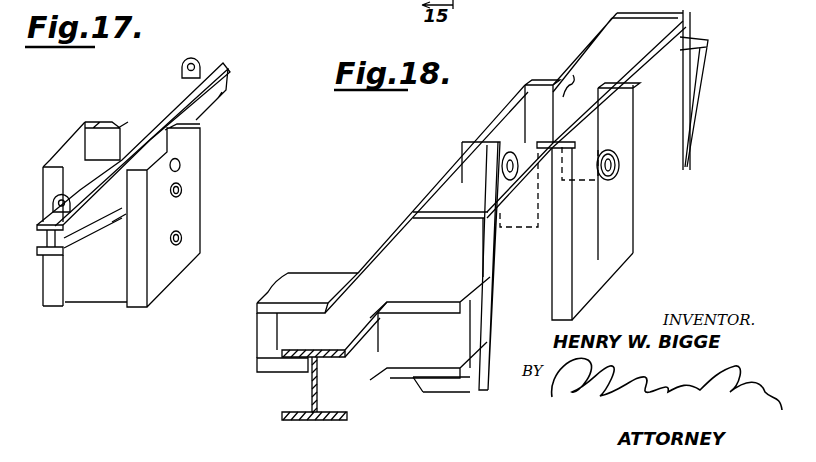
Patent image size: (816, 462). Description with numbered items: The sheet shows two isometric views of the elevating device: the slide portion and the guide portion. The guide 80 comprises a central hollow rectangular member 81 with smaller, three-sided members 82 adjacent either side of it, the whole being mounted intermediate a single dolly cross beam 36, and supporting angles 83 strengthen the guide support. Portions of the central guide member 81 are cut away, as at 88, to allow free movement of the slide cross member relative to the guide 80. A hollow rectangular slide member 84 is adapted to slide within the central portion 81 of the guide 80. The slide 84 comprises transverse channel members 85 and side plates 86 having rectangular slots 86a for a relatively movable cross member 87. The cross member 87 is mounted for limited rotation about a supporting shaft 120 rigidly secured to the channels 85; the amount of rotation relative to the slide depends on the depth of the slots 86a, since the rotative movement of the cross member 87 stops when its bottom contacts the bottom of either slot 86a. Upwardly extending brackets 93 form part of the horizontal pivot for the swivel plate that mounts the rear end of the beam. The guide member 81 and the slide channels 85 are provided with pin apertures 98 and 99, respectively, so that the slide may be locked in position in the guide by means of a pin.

In FIG. 18, the dolly cross beam 36 is at (408, 237).
In FIG. 18, the guide 80 is at (652, 218).
In FIG. 18, the central hollow rectangular member 81 is at (516, 107).
In FIG. 18, the three-sided members 82 is at (460, 181).
In FIG. 18, the supporting angles 83 is at (462, 385).
In FIG. 17, the hollow rectangular slide member 84 is at (215, 177).
In FIG. 17, the transverse channel members 85 is at (70, 140).
In FIG. 17, the side plates 86 is at (100, 138).
In FIG. 17, the rectangular slots 86a is at (115, 247).
In FIG. 17, the cross member 87 is at (172, 97).
In FIG. 18, the cut-away portions 88 is at (581, 79).
In FIG. 17, the upwardly extending brackets 93 is at (52, 203).
In FIG. 18, the pin apertures 98 is at (502, 174).
In FIG. 17, the pin apertures 99 is at (183, 230).
In FIG. 17, the supporting shaft 120 is at (181, 168).